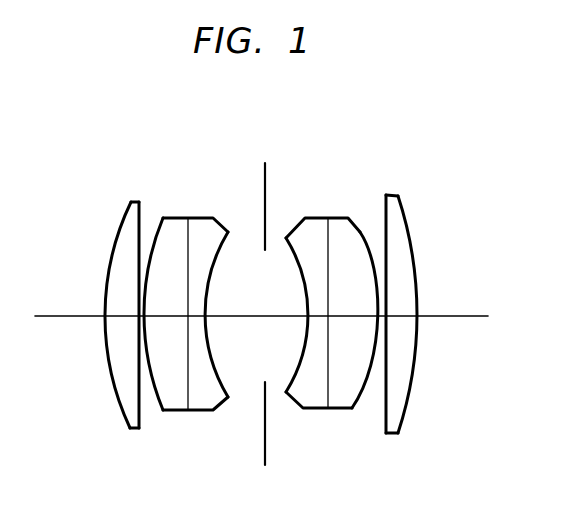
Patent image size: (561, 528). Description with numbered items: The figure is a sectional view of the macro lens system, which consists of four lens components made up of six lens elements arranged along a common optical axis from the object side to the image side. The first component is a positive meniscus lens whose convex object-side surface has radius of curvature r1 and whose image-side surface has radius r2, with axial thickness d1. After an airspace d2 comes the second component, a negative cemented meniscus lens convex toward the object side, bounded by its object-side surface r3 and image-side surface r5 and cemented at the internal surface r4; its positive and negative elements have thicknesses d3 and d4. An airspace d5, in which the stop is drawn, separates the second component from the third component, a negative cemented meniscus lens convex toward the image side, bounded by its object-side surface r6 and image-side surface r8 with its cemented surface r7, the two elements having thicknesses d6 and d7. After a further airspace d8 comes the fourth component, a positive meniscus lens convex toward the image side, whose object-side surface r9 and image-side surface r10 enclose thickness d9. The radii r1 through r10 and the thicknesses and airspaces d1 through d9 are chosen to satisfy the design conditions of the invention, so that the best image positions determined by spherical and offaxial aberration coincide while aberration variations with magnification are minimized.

The radius of curvature of object side surface of first lens component r1 is at (122, 226).
The radius of curvature of image side surface of first lens component r2 is at (142, 202).
The radius of curvature of object side surface of second lens component r3 is at (160, 220).
The radius of curvature of cemented surface of second lens component r4 is at (188, 218).
The radius of curvature of image side surface of second lens component r5 is at (222, 250).
The radius of curvature of object side surface of third lens component r6 is at (293, 256).
The radius of curvature of cemented surface of third lens component r7 is at (327, 240).
The radius of curvature of image side surface of third lens component r8 is at (360, 232).
The radius of curvature of object side surface of fourth lens component r9 is at (385, 228).
The radius of curvature of image side surface of fourth lens component r10 is at (406, 215).
The thickness of first lens component d1 is at (118, 318).
The airspace between first and second lens components d2 is at (136, 320).
The thickness of object side element of second lens component d3 is at (168, 320).
The thickness of image side element of second lens component d4 is at (195, 318).
The airspace between second and third lens components d5 is at (263, 318).
The thickness of object side element of third lens component d6 is at (318, 318).
The thickness of image side element of third lens component d7 is at (338, 318).
The airspace between third and fourth lens components d8 is at (378, 318).
The thickness of fourth lens component d9 is at (400, 318).